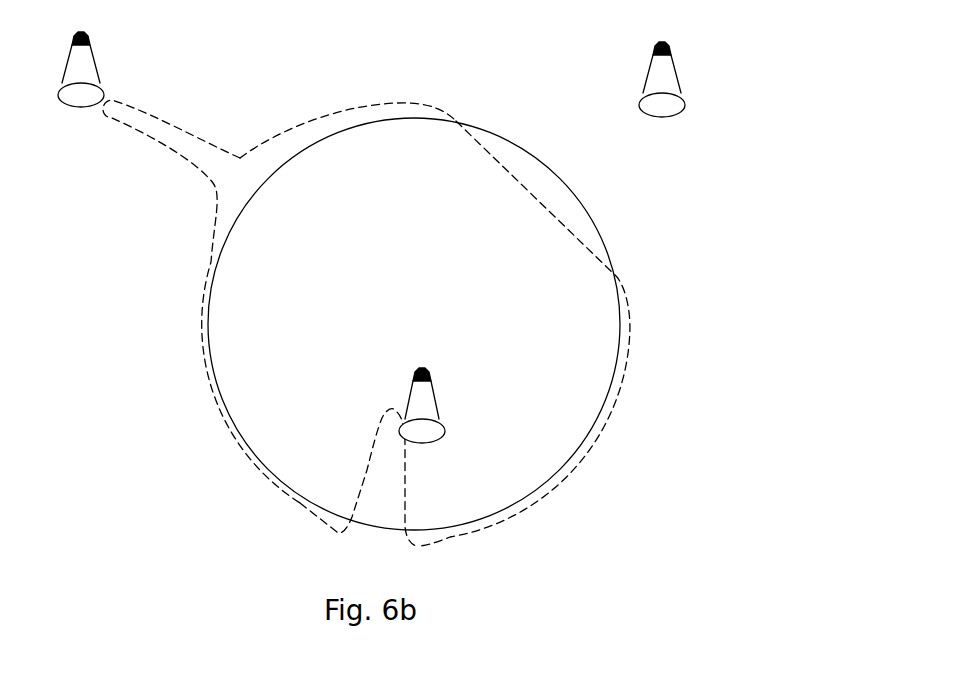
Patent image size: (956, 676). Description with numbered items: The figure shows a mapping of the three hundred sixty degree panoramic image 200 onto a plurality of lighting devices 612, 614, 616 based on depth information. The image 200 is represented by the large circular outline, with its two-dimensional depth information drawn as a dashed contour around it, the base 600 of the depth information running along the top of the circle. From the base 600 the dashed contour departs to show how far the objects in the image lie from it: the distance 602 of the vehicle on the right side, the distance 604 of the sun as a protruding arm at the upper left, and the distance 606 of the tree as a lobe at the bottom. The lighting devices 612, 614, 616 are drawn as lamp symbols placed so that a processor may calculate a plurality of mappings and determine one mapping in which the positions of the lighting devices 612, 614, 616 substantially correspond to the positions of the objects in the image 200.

The image 200 is at (522, 145).
The base 600 is at (428, 107).
The distance 602 is at (562, 230).
The distance 604 is at (165, 127).
The distance 606 is at (397, 503).
The lighting device 612 is at (655, 120).
The lighting device 614 is at (80, 98).
The lighting device 616 is at (428, 432).